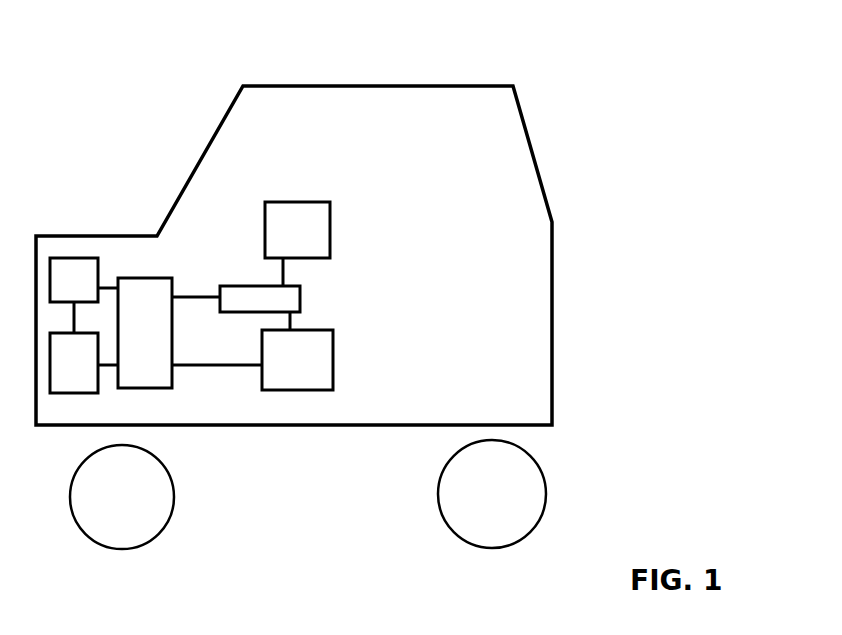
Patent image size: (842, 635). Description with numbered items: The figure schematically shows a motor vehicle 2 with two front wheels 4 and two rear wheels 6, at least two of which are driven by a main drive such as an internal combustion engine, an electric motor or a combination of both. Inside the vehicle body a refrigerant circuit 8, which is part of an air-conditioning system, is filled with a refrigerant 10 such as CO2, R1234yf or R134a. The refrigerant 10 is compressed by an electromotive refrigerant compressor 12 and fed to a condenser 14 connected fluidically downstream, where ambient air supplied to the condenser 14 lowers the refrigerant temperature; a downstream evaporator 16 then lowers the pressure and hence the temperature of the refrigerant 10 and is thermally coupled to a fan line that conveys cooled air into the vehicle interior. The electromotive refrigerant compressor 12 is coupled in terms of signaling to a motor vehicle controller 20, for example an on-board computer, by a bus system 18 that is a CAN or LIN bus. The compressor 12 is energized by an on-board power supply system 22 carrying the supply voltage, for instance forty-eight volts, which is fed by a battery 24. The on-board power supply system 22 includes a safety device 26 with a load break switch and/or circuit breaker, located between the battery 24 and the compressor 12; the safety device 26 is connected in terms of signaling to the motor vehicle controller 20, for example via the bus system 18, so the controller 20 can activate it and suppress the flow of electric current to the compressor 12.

The motor vehicle 2 is at (570, 118).
The front wheels 4 is at (122, 497).
The rear wheels 6 is at (492, 494).
The refrigerant circuit 8 is at (112, 212).
The refrigerant 10 is at (112, 283).
The electromotive refrigerant compressor 12 is at (145, 333).
The condenser 14 is at (84, 280).
The evaporator 16 is at (84, 347).
The bus system 18 is at (208, 367).
The motor vehicle controller 20 is at (297, 351).
The on-board power supply system 22 is at (198, 256).
The battery 24 is at (297, 244).
The safety device 26 is at (245, 283).